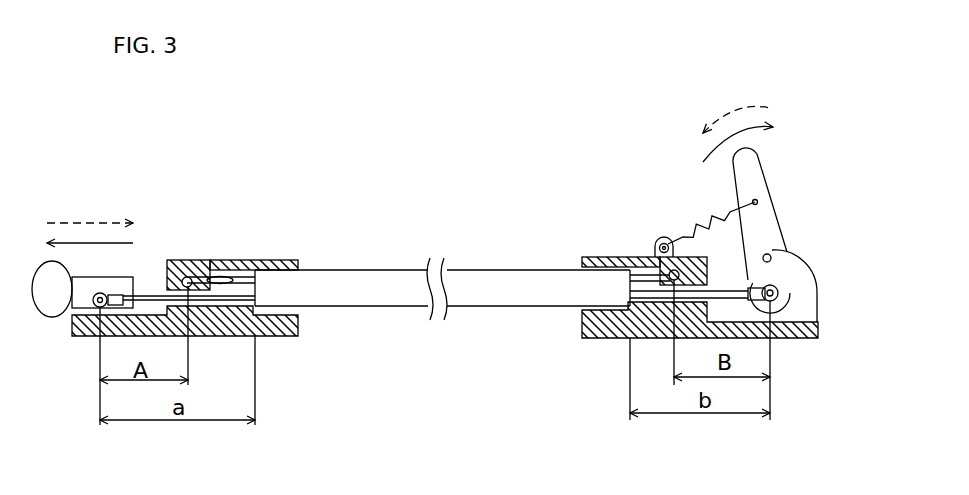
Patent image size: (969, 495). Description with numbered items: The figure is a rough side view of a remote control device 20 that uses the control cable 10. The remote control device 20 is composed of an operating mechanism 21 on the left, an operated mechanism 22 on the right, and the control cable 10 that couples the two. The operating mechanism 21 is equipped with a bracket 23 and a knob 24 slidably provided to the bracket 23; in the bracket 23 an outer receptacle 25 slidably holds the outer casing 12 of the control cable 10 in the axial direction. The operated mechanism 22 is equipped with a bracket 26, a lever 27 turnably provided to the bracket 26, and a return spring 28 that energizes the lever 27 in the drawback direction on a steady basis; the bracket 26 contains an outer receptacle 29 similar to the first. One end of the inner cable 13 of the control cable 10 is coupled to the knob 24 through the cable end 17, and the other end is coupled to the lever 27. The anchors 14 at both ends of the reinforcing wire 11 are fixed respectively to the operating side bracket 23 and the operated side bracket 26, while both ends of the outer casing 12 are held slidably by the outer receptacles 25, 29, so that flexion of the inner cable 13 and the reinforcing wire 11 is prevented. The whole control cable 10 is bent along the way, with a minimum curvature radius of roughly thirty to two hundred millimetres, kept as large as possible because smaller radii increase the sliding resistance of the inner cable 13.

The control cable 10 is at (370, 267).
The reinforcing wire 11 is at (223, 277).
The outer casing 12 is at (395, 297).
The inner cable 13 is at (145, 298).
The anchor 14 is at (187, 277).
The cable end 17 is at (117, 297).
The remote control device 20 is at (465, 192).
The operating mechanism 21 is at (232, 233).
The operated mechanism 22 is at (648, 200).
The bracket 23 is at (273, 330).
The knob 24 is at (54, 317).
The outer receptacle 25 is at (238, 279).
The bracket 26 is at (582, 327).
The lever 27 is at (743, 180).
The return spring 28 is at (690, 227).
The outer receptacle 29 is at (626, 308).